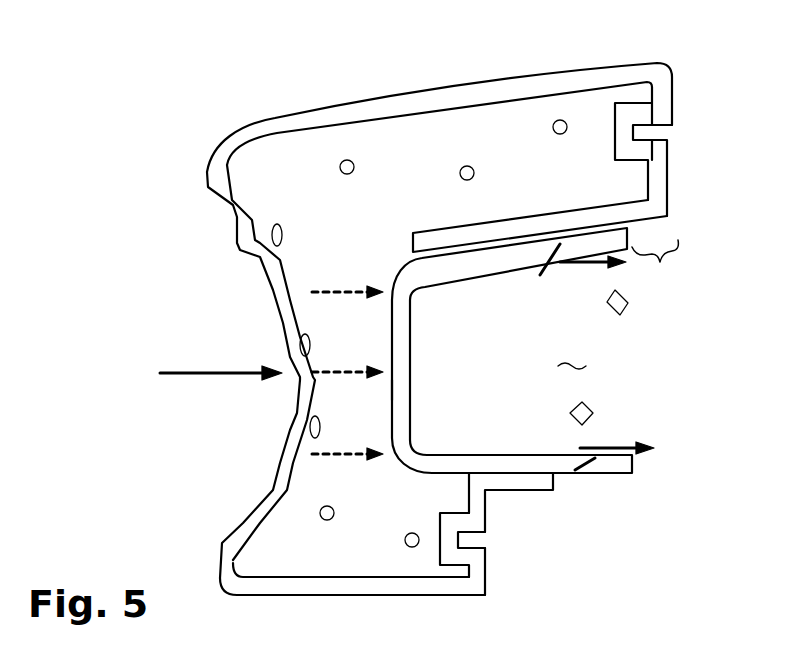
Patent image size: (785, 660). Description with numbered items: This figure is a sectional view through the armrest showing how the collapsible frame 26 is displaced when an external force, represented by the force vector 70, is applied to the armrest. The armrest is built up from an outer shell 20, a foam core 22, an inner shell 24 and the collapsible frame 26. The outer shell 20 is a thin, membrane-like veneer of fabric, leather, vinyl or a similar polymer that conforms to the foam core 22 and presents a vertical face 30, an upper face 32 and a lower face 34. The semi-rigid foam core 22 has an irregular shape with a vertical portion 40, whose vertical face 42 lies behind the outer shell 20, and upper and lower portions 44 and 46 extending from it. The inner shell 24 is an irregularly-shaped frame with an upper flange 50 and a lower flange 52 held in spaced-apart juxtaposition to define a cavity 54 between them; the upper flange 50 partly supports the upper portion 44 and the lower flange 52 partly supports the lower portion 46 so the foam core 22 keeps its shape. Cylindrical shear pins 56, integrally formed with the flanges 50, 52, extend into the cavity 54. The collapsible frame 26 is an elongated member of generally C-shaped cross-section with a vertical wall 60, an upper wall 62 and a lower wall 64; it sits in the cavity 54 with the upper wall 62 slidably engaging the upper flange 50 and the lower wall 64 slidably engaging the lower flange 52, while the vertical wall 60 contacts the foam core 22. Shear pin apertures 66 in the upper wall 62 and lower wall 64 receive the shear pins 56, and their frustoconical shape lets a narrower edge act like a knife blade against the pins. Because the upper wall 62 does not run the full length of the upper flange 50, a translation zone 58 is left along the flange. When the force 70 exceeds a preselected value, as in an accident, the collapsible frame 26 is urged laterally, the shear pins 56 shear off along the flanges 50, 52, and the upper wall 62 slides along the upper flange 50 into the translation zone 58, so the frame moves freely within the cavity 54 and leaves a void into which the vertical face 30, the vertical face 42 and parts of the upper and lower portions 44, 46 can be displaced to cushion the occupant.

The outer shell 20 is at (499, 74).
The foam core 22 is at (571, 108).
The inner shell 24 is at (676, 158).
The collapsible frame 26 is at (421, 410).
The vertical face 30 is at (293, 403).
The upper face 32 is at (438, 90).
The lower face 34 is at (418, 597).
The vertical portion 40 is at (282, 183).
The vertical face 42 is at (287, 417).
The upper portion 44 is at (385, 158).
The lower portion 46 is at (363, 545).
The upper flange 50 is at (665, 212).
The lower flange 52 is at (515, 487).
The cavity 54 is at (571, 355).
The shear pins 56 is at (628, 305).
The translation zone 58 is at (619, 347).
The vertical wall 60 is at (410, 347).
The upper wall 62 is at (502, 262).
The lower wall 64 is at (493, 457).
The shear pin apertures 66 is at (560, 245).
The force vector 70 is at (210, 372).